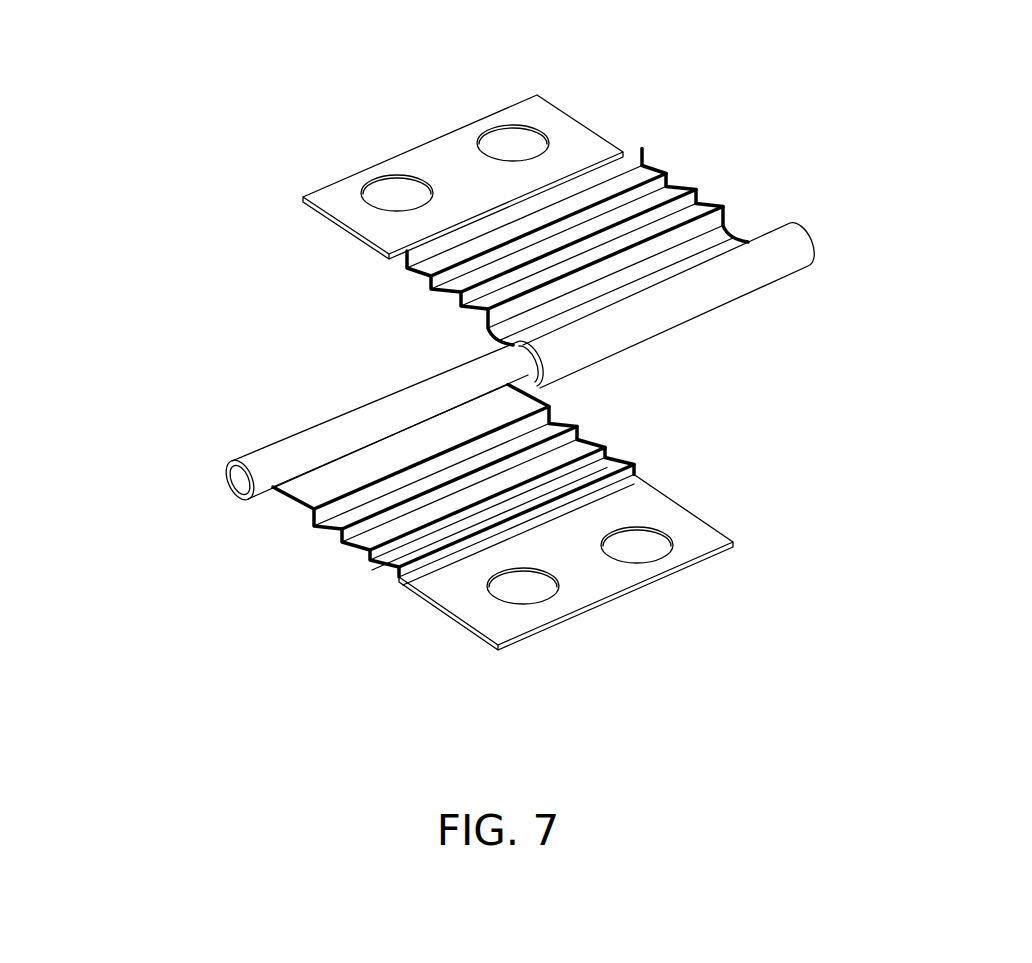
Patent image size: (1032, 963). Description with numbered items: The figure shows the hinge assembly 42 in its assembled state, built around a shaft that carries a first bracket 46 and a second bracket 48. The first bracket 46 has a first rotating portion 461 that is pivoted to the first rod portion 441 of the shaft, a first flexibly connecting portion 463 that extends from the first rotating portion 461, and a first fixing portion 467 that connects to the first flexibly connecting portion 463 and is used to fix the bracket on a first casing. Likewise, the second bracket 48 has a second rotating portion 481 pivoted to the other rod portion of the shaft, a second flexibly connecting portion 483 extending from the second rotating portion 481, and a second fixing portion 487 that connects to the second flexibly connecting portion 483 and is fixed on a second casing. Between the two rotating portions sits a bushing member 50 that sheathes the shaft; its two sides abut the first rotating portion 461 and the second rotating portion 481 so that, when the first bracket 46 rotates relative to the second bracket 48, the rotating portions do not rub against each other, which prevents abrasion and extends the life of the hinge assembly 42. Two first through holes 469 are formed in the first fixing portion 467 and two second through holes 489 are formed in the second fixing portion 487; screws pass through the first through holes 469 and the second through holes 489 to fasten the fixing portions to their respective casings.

The hinge assembly 42 is at (574, 379).
The second bracket 48 is at (536, 210).
The first bracket 46 is at (467, 534).
The bushing member 50 is at (500, 344).
The second rotating portion 481 is at (718, 290).
The second flexibly connecting portion 483 is at (645, 167).
The second fixing portion 487 is at (582, 140).
The second through holes 489 is at (514, 141).
The first rotating portion 461 is at (336, 471).
The first rod portion 441 is at (240, 497).
The first flexibly connecting portion 463 is at (376, 556).
The first fixing portion 467 is at (588, 583).
The first through holes 469 is at (647, 545).